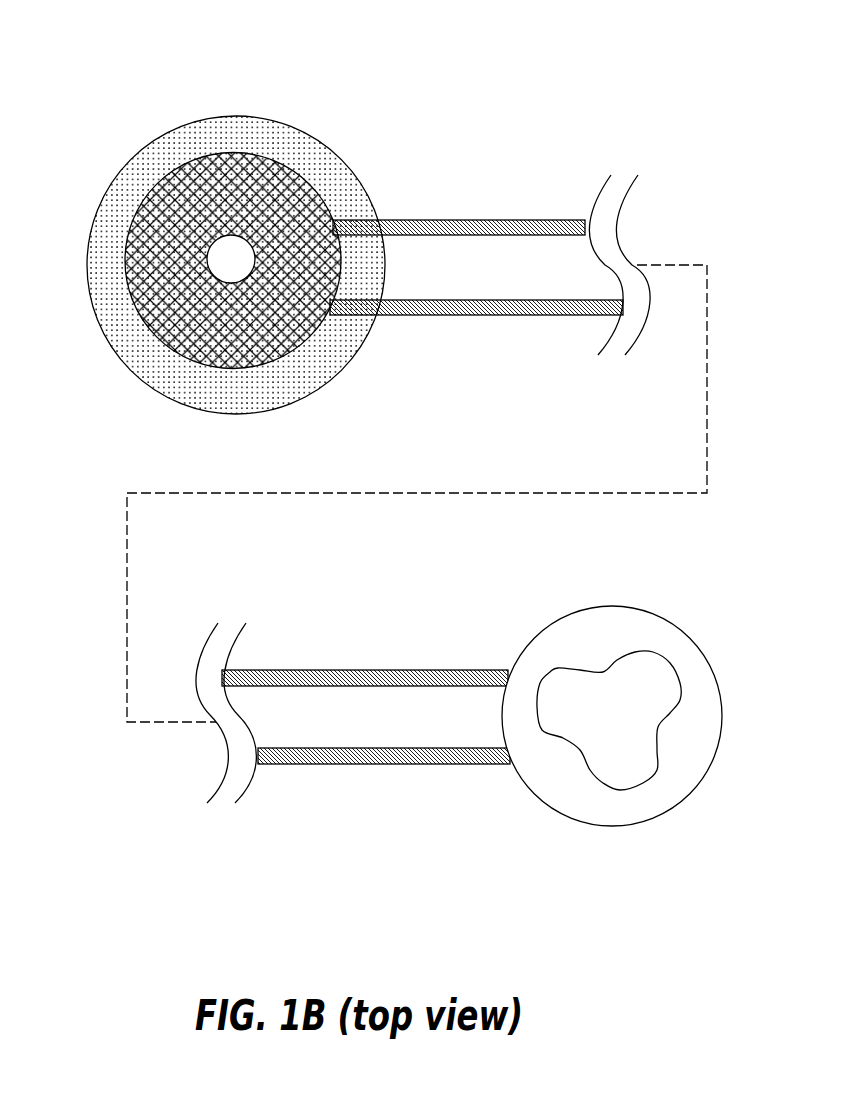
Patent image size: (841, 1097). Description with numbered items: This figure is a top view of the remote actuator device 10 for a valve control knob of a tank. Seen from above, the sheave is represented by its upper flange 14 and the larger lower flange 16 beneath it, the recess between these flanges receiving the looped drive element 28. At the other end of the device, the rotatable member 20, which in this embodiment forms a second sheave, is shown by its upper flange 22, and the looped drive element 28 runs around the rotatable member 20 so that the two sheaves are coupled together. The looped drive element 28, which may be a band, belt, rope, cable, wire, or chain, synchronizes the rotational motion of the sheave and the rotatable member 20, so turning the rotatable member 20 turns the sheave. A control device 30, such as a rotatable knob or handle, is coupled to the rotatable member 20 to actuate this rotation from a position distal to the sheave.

The remote actuator device 10 is at (106, 73).
The upper flange 14 is at (167, 173).
The lower flange 16 is at (270, 120).
The rotatable member 20 is at (526, 603).
The upper flange 22 is at (638, 605).
The looped drive element 28 is at (438, 220).
The control device 30 is at (583, 767).